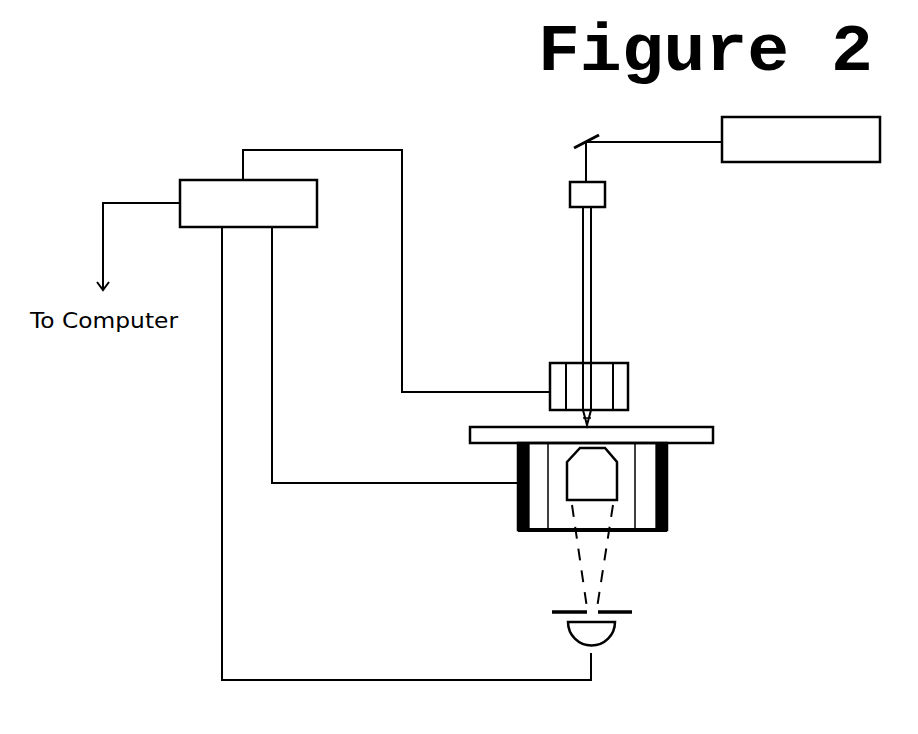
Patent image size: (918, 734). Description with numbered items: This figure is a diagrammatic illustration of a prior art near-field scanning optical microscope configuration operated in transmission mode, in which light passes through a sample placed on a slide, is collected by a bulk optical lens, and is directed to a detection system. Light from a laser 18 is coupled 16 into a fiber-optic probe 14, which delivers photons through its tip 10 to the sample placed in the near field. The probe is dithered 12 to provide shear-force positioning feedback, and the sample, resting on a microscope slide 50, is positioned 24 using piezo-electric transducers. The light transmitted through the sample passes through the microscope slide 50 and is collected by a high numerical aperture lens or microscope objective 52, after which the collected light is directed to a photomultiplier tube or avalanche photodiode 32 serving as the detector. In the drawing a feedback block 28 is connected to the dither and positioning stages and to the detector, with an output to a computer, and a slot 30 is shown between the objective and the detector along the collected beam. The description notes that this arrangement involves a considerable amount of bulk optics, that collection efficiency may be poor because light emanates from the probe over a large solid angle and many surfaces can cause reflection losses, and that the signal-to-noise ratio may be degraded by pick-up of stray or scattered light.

The tip 10 is at (583, 425).
The dither 12 is at (622, 378).
The fiber-optic probe 14 is at (592, 307).
The coupler 16 is at (569, 196).
The laser 18 is at (833, 152).
The positioning 24 is at (653, 517).
The feedback circuit 28 is at (306, 217).
The slot aperture 30 is at (632, 610).
The photomultiplier tube or avalanche photodiode 32 is at (585, 633).
The microscope slide 50 is at (713, 436).
The microscope objective 52 is at (583, 480).